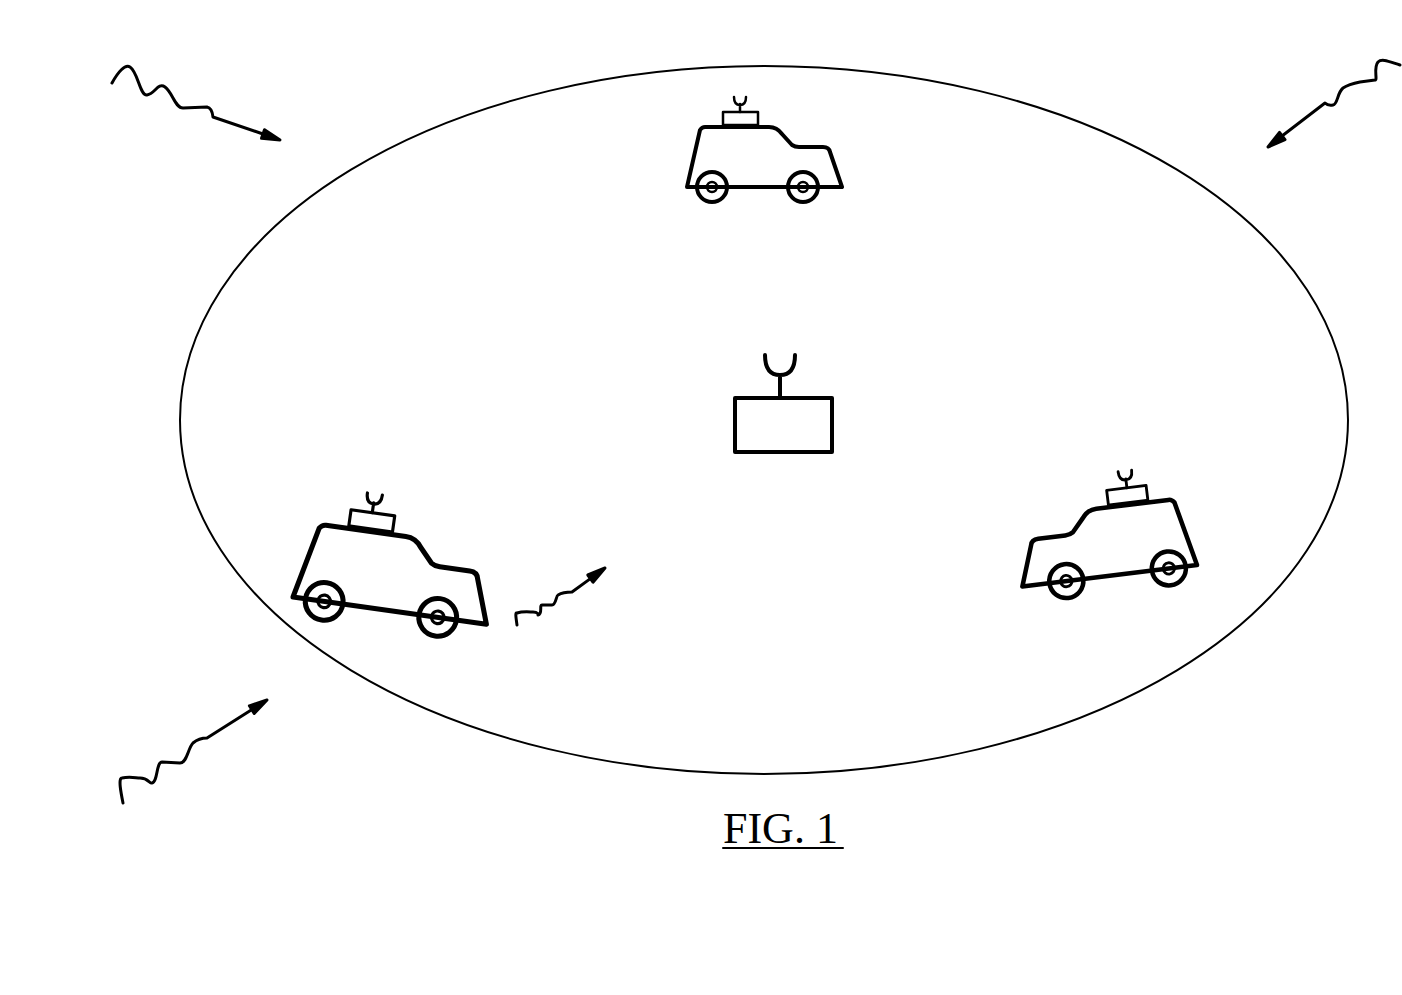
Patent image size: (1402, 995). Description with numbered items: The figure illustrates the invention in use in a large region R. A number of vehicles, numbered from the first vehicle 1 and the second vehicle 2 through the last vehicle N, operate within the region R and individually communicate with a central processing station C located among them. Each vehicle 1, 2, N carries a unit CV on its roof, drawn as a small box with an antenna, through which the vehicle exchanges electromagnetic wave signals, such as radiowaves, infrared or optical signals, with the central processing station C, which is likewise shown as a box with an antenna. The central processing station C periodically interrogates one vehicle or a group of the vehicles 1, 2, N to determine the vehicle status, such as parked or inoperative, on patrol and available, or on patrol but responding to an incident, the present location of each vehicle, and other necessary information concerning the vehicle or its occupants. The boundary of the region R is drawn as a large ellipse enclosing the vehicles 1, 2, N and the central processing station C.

The vehicle 1 is at (383, 562).
The vehicle 2 is at (773, 160).
The vehicle N is at (1147, 532).
The vehicle communication unit CV is at (743, 120).
The central processing station C is at (780, 425).
The region R is at (1163, 650).